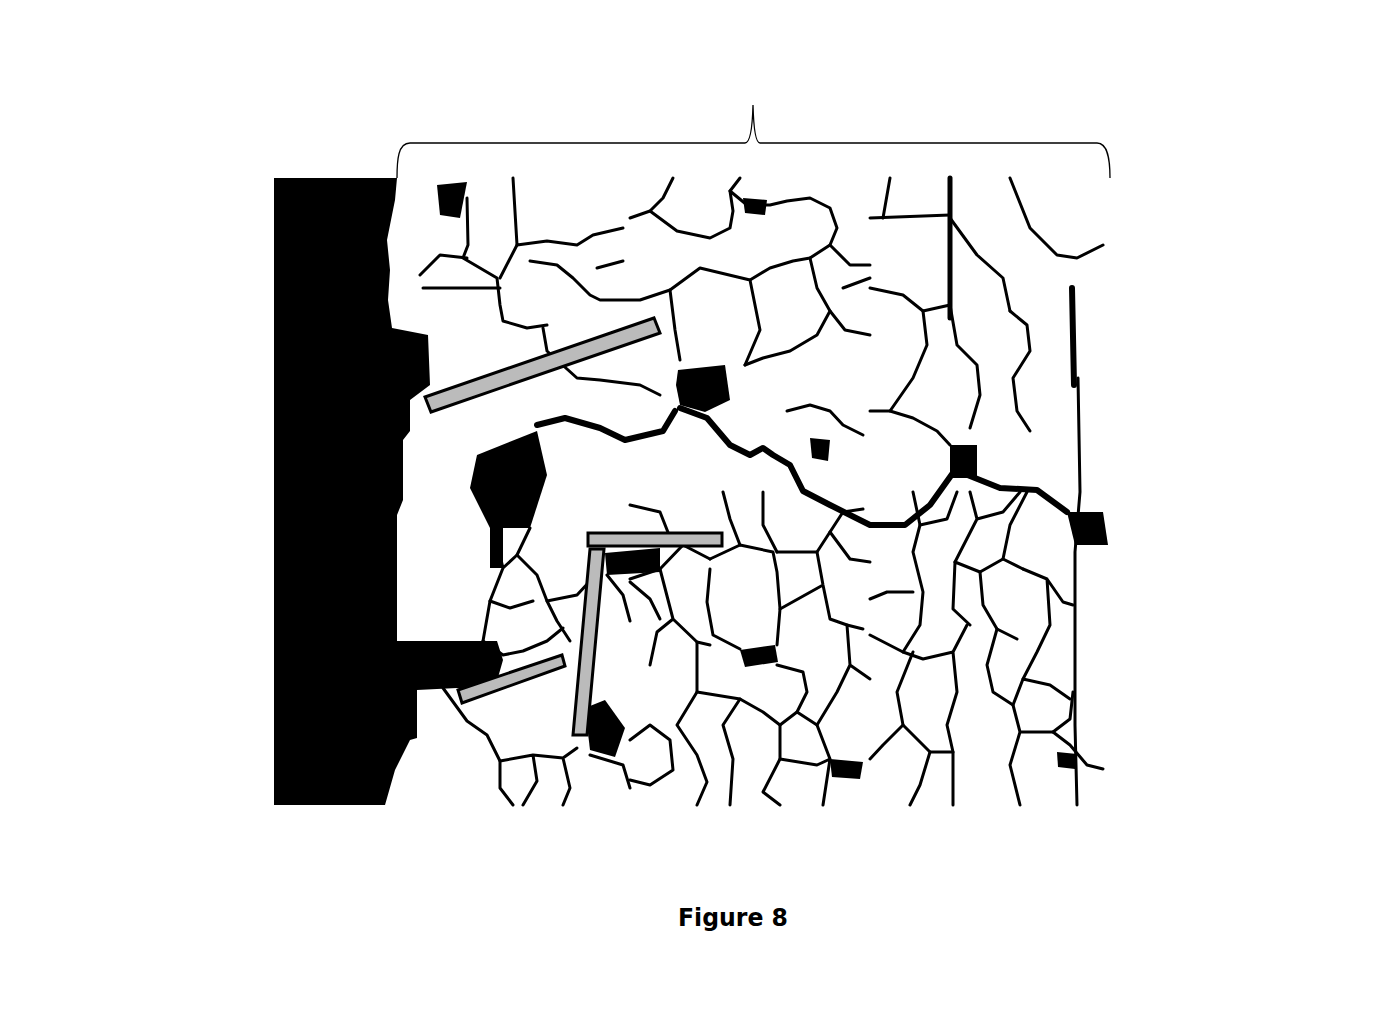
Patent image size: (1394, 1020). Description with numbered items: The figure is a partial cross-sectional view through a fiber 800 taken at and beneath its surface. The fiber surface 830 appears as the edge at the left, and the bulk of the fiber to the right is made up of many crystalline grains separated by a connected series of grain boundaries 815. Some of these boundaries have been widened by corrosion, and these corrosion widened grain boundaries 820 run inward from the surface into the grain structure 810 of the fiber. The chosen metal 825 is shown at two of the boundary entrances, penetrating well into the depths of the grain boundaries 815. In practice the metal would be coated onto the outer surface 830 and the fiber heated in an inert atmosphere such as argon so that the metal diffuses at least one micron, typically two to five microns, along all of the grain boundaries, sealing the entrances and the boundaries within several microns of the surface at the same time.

The fiber 800 is at (318, 139).
The grain structure region 810 is at (753, 125).
The connected series of grain boundaries 815 is at (1085, 603).
The corrosion widened grain boundaries 820 is at (907, 522).
The chosen metal 825 is at (625, 316).
The fiber surface 830 is at (393, 547).